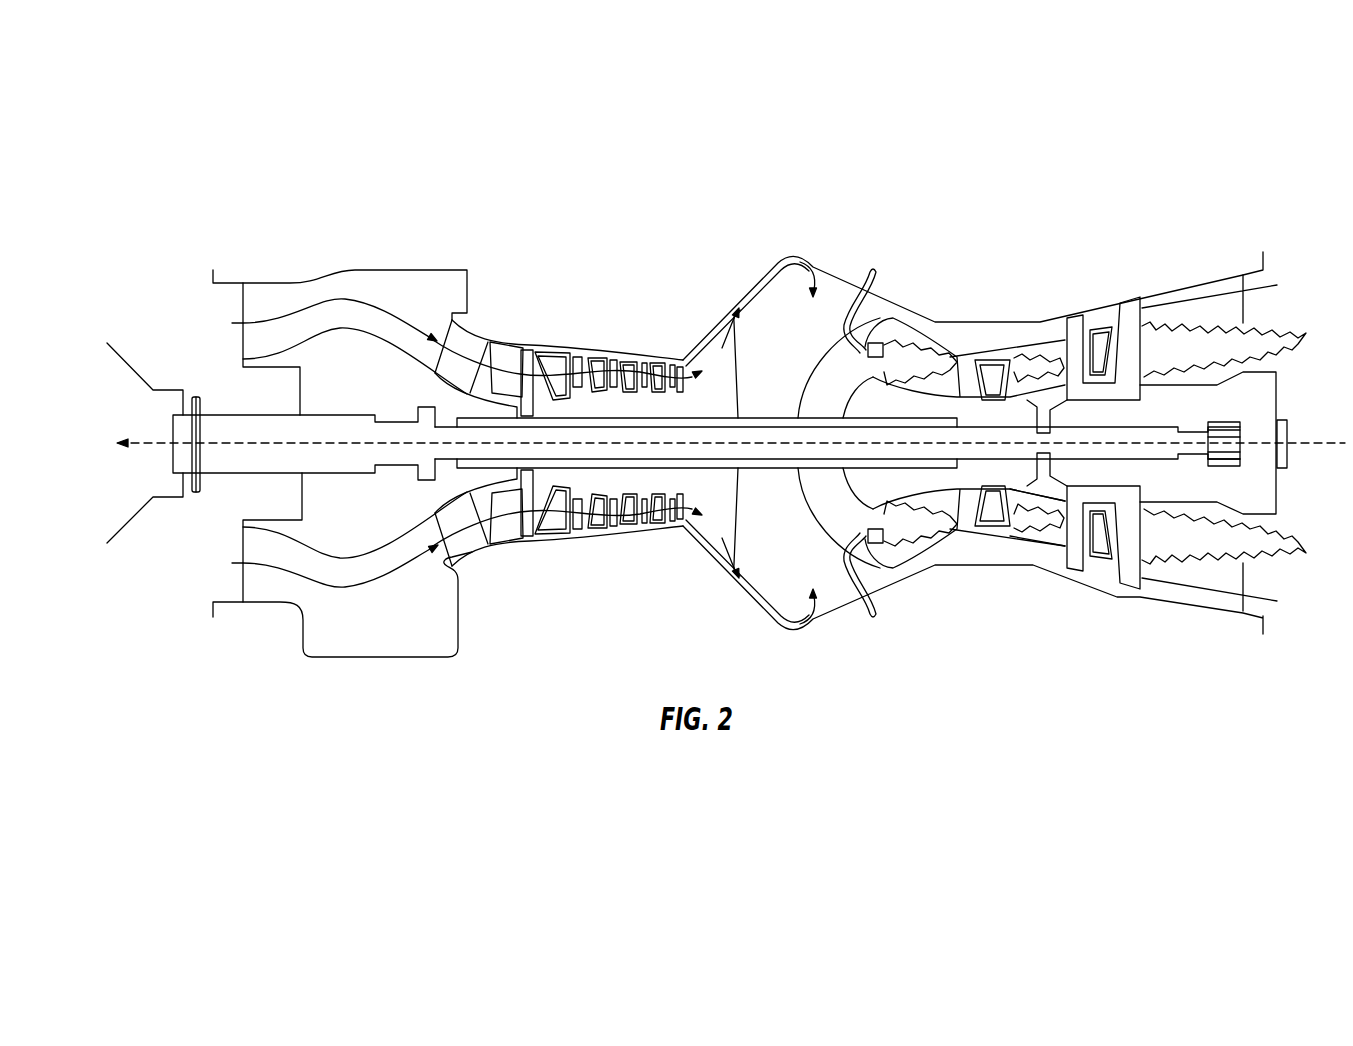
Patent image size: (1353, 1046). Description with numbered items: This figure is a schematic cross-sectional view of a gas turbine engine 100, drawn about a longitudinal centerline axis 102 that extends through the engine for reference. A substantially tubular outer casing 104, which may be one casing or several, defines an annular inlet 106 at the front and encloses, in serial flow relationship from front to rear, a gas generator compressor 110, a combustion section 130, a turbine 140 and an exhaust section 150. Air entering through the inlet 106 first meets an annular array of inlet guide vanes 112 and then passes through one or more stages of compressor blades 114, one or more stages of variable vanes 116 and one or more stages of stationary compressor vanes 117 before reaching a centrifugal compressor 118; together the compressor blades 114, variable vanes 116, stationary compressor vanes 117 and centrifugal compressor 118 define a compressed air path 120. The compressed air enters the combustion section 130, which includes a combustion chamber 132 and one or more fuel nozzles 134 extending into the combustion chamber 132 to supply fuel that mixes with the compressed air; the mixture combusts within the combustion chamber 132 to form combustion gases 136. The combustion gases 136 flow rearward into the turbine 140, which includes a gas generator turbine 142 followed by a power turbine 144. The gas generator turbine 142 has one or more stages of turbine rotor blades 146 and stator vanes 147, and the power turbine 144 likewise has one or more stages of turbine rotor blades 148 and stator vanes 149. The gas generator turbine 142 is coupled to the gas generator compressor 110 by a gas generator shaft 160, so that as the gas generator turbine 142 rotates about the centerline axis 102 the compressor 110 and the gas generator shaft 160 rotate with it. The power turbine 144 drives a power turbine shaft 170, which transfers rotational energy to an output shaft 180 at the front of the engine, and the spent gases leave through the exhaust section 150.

The gas turbine engine 100 is at (237, 659).
The centerline axis 102 is at (102, 440).
The outer casing 104 is at (557, 328).
The annular inlet 106 is at (250, 300).
The gas generator compressor 110 is at (561, 553).
The inlet guide vanes 112 is at (503, 505).
The compressor blades 114 is at (545, 363).
The variable vanes 116 is at (602, 528).
The stationary compressor vanes 117 is at (660, 367).
The centrifugal compressor 118 is at (707, 537).
The compressed air path 120 is at (470, 390).
The combustion section 130 is at (838, 572).
The combustion chamber 132 is at (928, 320).
The fuel nozzles 134 is at (902, 326).
The combustion gases 136 is at (933, 563).
The turbine 140 is at (1086, 580).
The gas generator turbine 142 is at (1030, 540).
The power turbine 144 is at (1154, 319).
The turbine rotor blades 146 is at (967, 360).
The stator vanes 147 is at (997, 357).
The turbine rotor blades 148 is at (1075, 333).
The stator vanes 149 is at (1105, 337).
The exhaust section 150 is at (1235, 629).
The gas generator shaft 160 is at (767, 400).
The power turbine shaft 170 is at (1150, 455).
The output shaft 180 is at (212, 422).